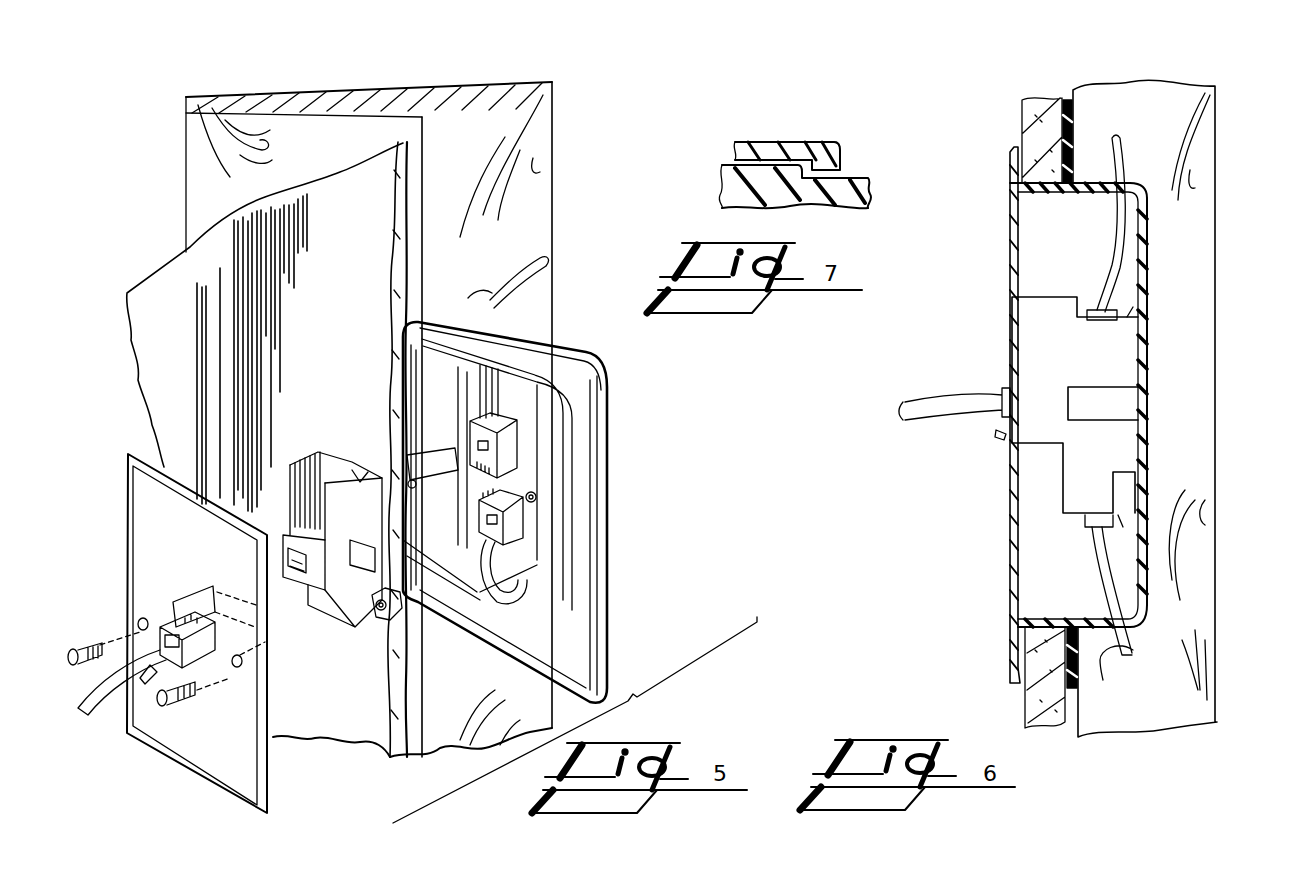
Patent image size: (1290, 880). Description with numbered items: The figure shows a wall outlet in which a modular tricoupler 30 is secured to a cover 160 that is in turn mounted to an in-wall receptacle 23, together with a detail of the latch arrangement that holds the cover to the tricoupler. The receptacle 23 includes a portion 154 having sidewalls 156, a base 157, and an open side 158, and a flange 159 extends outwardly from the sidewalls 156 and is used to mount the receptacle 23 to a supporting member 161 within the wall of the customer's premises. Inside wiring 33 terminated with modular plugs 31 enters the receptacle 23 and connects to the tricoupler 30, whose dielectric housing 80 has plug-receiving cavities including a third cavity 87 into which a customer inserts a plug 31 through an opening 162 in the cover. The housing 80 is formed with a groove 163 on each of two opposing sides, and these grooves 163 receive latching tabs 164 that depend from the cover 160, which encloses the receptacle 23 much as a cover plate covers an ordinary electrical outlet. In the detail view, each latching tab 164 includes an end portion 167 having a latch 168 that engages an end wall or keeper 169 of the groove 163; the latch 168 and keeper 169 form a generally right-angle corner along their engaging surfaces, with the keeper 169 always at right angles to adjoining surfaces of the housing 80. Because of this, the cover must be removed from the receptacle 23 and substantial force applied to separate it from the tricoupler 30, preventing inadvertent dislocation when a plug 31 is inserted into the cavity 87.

In FIG. 5, the receptacle 23 is at (622, 528).
In FIG. 6, the receptacle 23 is at (1157, 317).
In FIG. 5, the modular tricoupler 30 is at (313, 440).
In FIG. 6, the modular tricoupler 30 is at (1115, 457).
In FIG. 5, the modular plug 31 is at (517, 527).
In FIG. 6, the modular plug 31 is at (1092, 312).
In FIG. 5, the inside wiring 33 is at (522, 258).
In FIG. 6, the inside wiring 33 is at (1132, 148).
In FIG. 7, the housing 80 is at (857, 203).
In FIG. 5, the third cavity 87 is at (300, 582).
In FIG. 5, the portion 154 is at (600, 432).
In FIG. 5, the sidewalls 156 is at (565, 410).
In FIG. 6, the base 157 is at (1147, 240).
In FIG. 5, the open side 158 is at (417, 363).
In FIG. 6, the open side 158 is at (1032, 517).
In FIG. 5, the flange 159 is at (543, 350).
In FIG. 6, the flange 159 is at (1070, 137).
In FIG. 5, the cover 160 is at (140, 487).
In FIG. 6, the cover 160 is at (1013, 290).
In FIG. 5, the supporting member 161 is at (543, 150).
In FIG. 6, the supporting member 161 is at (1200, 123).
In FIG. 5, the opening 162 is at (215, 662).
In FIG. 5, the groove 163 is at (362, 600).
In FIG. 7, the groove 163 is at (860, 180).
In FIG. 6, the groove 163 is at (1120, 397).
In FIG. 5, the latching tab 164 is at (177, 613).
In FIG. 7, the latching tab 164 is at (758, 142).
In FIG. 7, the end portion 167 is at (833, 147).
In FIG. 7, the latch 168 is at (822, 142).
In FIG. 7, the keeper 169 is at (790, 180).